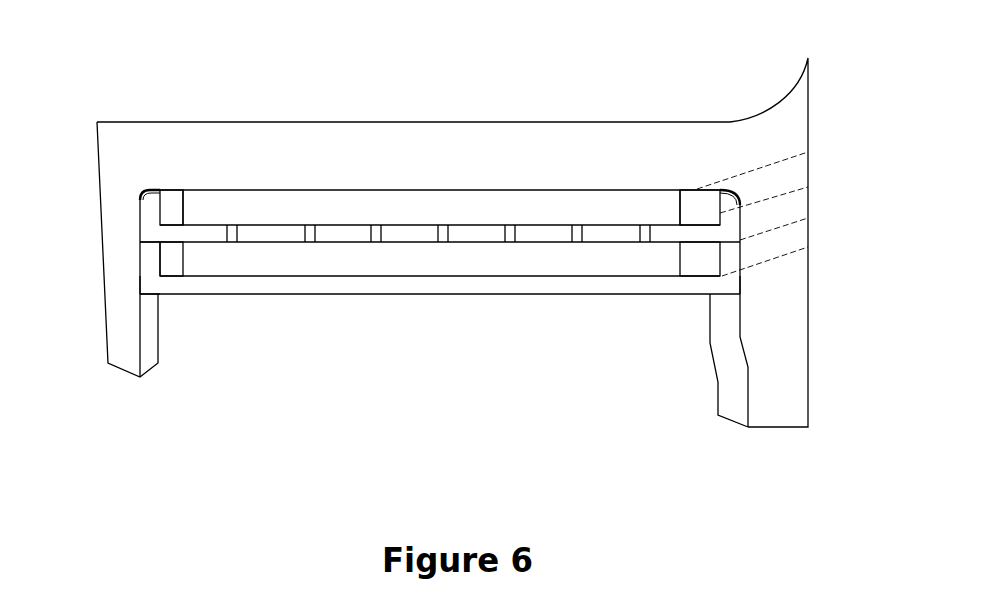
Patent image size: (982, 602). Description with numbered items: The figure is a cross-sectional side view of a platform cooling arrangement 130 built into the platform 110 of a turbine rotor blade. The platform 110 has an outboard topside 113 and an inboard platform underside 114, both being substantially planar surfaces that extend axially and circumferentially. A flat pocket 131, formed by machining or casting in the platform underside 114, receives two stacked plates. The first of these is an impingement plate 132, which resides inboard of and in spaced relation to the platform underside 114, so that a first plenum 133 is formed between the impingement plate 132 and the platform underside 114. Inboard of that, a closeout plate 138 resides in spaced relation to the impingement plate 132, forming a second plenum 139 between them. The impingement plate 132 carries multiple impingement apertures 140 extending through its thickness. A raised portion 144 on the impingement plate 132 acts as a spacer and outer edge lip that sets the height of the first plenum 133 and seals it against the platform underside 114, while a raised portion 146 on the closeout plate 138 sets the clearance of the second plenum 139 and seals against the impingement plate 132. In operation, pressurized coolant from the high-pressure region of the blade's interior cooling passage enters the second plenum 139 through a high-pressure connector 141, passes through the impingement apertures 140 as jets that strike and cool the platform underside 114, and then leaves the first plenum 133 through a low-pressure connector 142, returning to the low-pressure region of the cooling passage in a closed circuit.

The platform 110 is at (312, 168).
The topside 113 is at (263, 121).
The platform underside 114 is at (603, 190).
The platform cooling arrangement 130 is at (435, 412).
The flat pocket 131 is at (558, 335).
The impingement plate 132 is at (478, 235).
The first plenum 133 is at (379, 213).
The closeout plate 138 is at (353, 283).
The second plenum 139 is at (463, 263).
The impingement apertures 140 is at (233, 230).
The high-pressure connector 141 is at (783, 240).
The low-pressure connector 142 is at (783, 174).
The raised portion 144 is at (152, 213).
The raised portion 146 is at (150, 262).